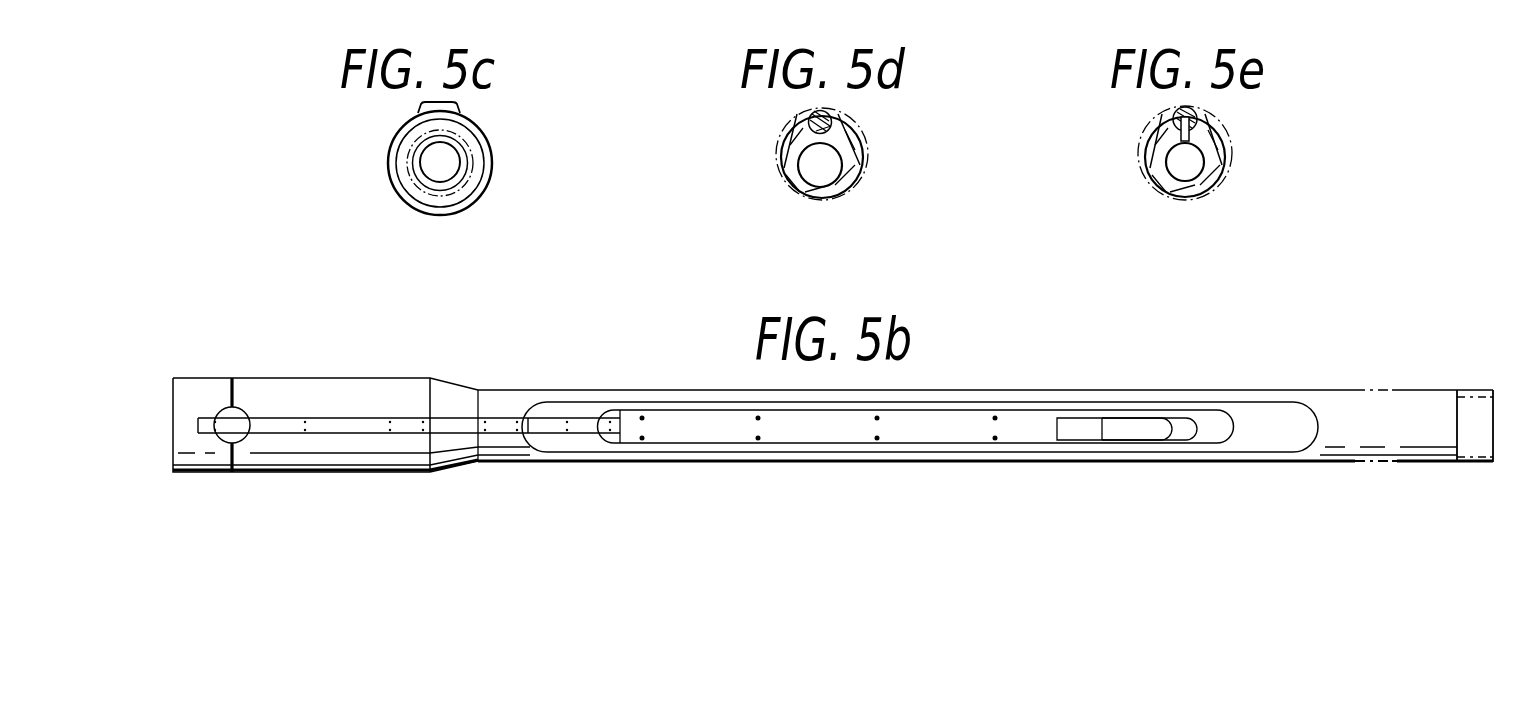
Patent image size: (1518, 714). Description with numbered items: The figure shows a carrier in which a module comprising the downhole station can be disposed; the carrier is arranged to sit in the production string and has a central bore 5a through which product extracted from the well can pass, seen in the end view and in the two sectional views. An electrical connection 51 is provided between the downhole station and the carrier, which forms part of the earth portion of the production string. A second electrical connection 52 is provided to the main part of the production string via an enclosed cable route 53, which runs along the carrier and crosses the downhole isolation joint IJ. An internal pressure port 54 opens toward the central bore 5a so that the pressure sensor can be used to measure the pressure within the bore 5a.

In FIG. 5c, the central bore 5a is at (443, 155).
In FIG. 5d, the central bore 5a is at (812, 161).
In FIG. 5e, the central bore 5a is at (1172, 158).
In FIG. 5b, the electrical connection 51 is at (1182, 428).
In FIG. 5b, the electrical connection 52 is at (206, 430).
In FIG. 5b, the enclosed cable route 53 is at (417, 425).
In FIG. 5e, the internal pressure port 54 is at (1192, 140).
In FIG. 5b, the downhole isolation joint IJ is at (231, 411).